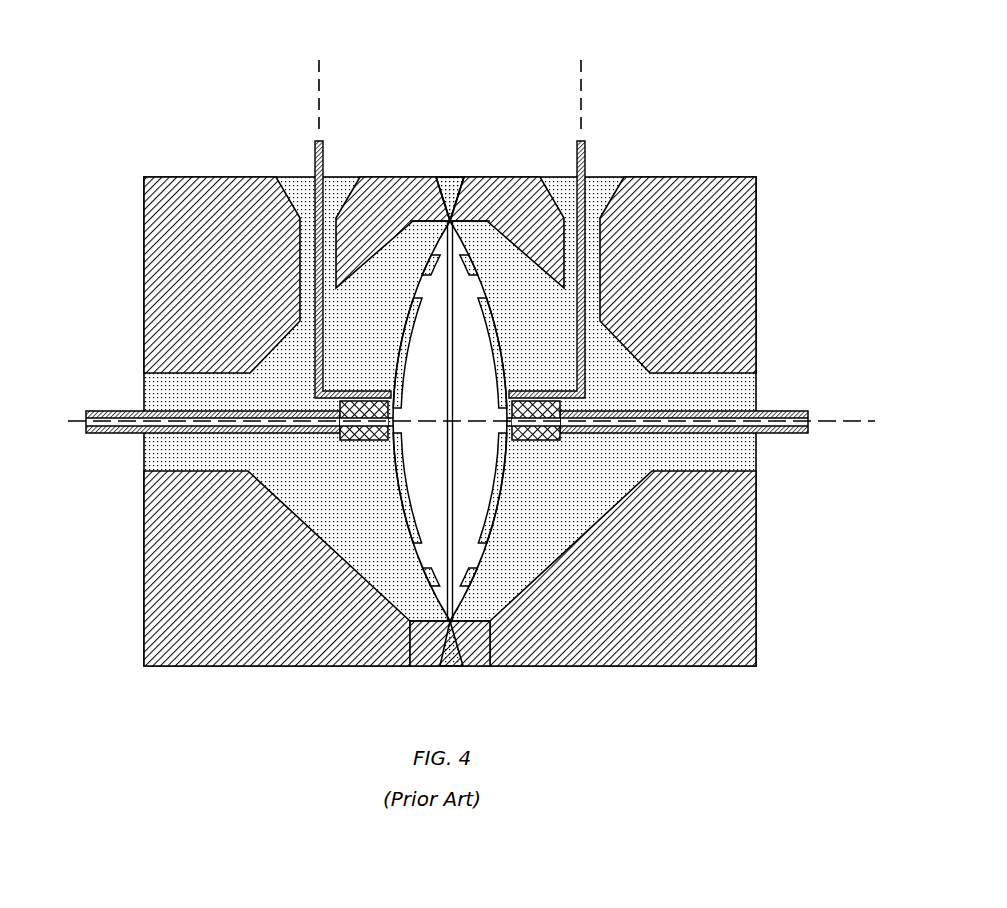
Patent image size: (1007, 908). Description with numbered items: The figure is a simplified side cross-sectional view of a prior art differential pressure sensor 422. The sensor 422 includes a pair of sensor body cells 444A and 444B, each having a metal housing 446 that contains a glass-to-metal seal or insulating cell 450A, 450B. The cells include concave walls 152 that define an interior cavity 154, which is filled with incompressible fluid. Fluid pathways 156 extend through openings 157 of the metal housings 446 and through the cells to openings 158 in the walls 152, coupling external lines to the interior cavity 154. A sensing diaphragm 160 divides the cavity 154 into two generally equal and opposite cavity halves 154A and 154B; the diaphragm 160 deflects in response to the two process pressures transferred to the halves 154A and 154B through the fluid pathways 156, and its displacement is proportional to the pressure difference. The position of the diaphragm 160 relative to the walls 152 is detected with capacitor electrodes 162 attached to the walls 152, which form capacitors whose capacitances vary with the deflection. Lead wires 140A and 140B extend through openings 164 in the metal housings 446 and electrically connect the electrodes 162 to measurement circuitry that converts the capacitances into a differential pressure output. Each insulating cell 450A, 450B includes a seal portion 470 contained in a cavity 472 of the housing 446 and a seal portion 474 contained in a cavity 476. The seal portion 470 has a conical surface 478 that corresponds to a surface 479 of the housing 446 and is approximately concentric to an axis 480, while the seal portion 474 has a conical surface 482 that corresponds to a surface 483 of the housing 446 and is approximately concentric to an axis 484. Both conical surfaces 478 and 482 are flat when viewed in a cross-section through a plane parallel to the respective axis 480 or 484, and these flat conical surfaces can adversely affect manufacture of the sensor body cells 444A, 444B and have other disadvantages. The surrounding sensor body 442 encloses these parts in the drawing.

The differential pressure sensor 422 is at (131, 100).
The mold housing 442 is at (733, 267).
The sensor body cell 444A is at (165, 650).
The sensor body cell 444B is at (712, 645).
The metal housing 446 is at (155, 547).
The insulating cell 450A is at (290, 488).
The insulating cell 450B is at (598, 490).
The seal portion 470 is at (398, 584).
The cavity 472 is at (372, 566).
The seal portion 474 is at (334, 172).
The cavity 476 is at (349, 175).
The conical surface 478 is at (321, 553).
The surface 479 is at (338, 544).
The axis 480 is at (72, 415).
The conical surface 482 is at (270, 183).
The surface 483 is at (295, 180).
The axis 484 is at (310, 90).
The lead wire 140A is at (310, 320).
The lead wire 140B is at (574, 320).
The concave wall 152 is at (410, 547).
The interior cavity 154 is at (452, 168).
The cavity half 154A is at (413, 348).
The cavity half 154B is at (471, 348).
The fluid pathway 156 is at (182, 403).
The opening 157 is at (116, 387).
The opening 158 is at (288, 487).
The sensing diaphragm 160 is at (446, 400).
The capacitor electrode 162 is at (400, 298).
The opening 164 is at (324, 174).